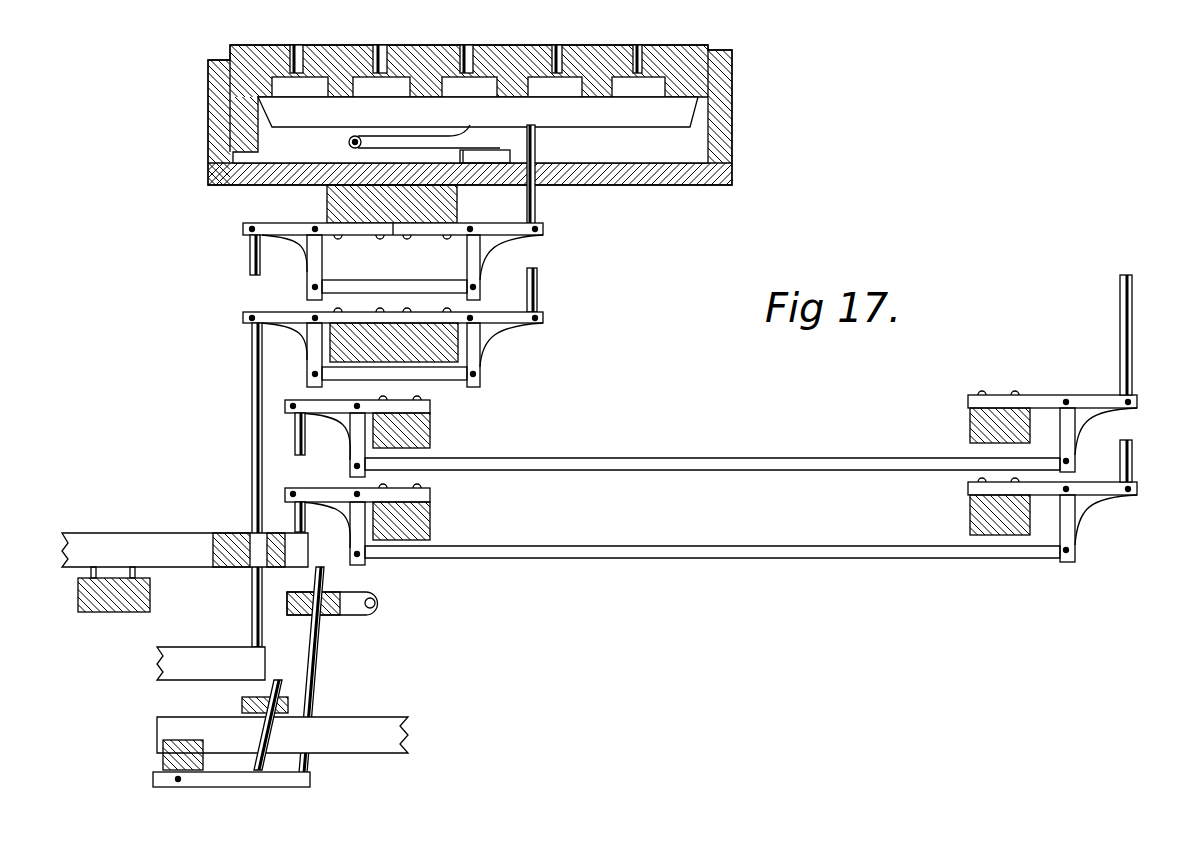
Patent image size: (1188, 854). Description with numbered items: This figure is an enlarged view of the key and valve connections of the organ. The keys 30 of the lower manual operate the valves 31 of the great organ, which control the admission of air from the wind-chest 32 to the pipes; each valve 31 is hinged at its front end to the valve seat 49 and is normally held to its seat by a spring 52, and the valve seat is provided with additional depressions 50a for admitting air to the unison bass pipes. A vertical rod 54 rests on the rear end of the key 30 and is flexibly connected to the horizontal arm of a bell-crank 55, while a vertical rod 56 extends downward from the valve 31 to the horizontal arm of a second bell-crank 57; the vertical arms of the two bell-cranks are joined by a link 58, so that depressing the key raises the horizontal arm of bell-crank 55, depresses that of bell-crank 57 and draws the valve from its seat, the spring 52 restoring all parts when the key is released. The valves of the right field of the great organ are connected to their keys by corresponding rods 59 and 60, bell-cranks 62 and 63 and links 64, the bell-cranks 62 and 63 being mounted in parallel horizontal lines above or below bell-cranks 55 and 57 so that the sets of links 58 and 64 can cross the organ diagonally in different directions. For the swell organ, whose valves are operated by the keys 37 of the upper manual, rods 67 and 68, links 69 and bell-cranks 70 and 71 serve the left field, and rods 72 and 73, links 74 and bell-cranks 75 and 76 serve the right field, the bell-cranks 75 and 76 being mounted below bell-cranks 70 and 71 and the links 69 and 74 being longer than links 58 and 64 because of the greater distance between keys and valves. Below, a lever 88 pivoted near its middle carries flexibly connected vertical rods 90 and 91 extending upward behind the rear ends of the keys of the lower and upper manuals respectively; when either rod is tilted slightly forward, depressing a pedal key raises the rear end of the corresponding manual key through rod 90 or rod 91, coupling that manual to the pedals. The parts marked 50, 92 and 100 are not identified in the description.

The keys 30 is at (211, 663).
The valves 31 is at (478, 112).
The wind-chest 32 is at (470, 134).
The keys 37 is at (185, 572).
The valve seat 49 is at (466, 62).
The recess 50 is at (427, 87).
The depressions 50a is at (638, 87).
The spring 52 is at (348, 143).
The vertical rod 54 is at (239, 255).
The bell-crank 55 is at (284, 253).
The vertical rod 56 is at (515, 180).
The bell-crank 57 is at (511, 254).
The link 58 is at (393, 284).
The rod 59 is at (252, 608).
The rod 60 is at (537, 292).
The bell-crank 62 is at (284, 340).
The bell-crank 63 is at (511, 341).
The link 64 is at (393, 347).
The rod 67 is at (297, 450).
The rod 68 is at (1110, 335).
The link 69 is at (722, 458).
The bell-crank 70 is at (1052, 431).
The bell-crank 71 is at (357, 436).
The rod 72 is at (295, 518).
The rod 73 is at (1132, 448).
The link 74 is at (648, 546).
The bell-crank 75 is at (357, 524).
The bell-crank 76 is at (1052, 520).
The lever 88 is at (233, 787).
The vertical rod 90 is at (282, 725).
The vertical rod 91 is at (320, 670).
The block 92 is at (332, 603).
The block 100 is at (265, 704).